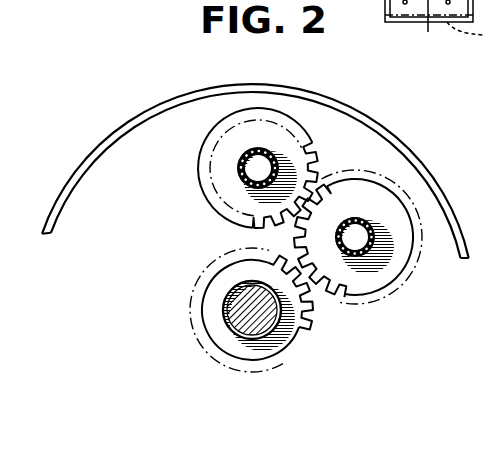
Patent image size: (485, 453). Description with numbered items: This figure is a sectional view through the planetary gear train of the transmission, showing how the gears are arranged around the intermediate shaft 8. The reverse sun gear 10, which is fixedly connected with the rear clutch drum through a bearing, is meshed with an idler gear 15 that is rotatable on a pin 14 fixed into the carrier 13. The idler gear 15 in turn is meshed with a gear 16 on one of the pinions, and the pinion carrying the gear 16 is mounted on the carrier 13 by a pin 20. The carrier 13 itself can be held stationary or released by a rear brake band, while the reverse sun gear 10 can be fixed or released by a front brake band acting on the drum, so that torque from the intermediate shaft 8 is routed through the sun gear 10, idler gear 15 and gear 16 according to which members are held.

The intermediate shaft 8 is at (225, 317).
The reverse sun gear 10 is at (273, 345).
The carrier 13 is at (141, 117).
The pin 14 is at (352, 243).
The idler gear 15 is at (402, 255).
The gear 16 is at (230, 195).
The pins 20 is at (250, 165).